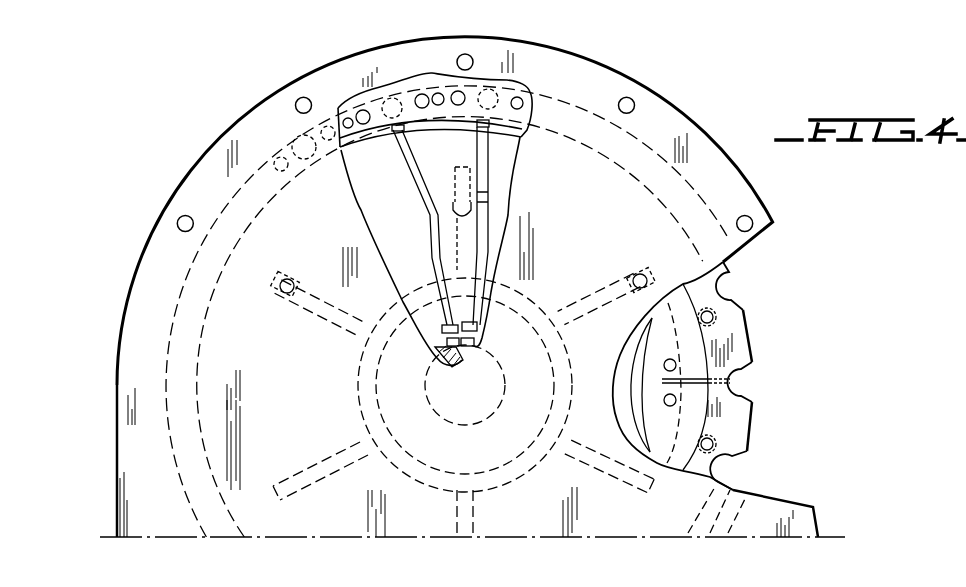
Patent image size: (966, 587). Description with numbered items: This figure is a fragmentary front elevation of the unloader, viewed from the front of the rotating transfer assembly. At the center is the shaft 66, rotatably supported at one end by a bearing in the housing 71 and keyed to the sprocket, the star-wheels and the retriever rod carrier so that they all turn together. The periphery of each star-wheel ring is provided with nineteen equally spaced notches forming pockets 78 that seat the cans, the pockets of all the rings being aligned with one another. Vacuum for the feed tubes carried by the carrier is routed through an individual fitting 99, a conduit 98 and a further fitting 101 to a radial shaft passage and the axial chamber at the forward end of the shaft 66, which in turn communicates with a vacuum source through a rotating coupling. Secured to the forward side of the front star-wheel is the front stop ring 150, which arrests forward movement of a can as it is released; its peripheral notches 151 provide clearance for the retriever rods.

The housing 71 is at (593, 239).
The shaft 66 is at (450, 421).
The fitting 99 is at (478, 127).
The conduit 98 is at (450, 208).
The fitting 101 is at (440, 337).
The front stop ring 150 is at (753, 431).
The pockets 78 is at (725, 291).
The peripheral notches 151 is at (742, 368).